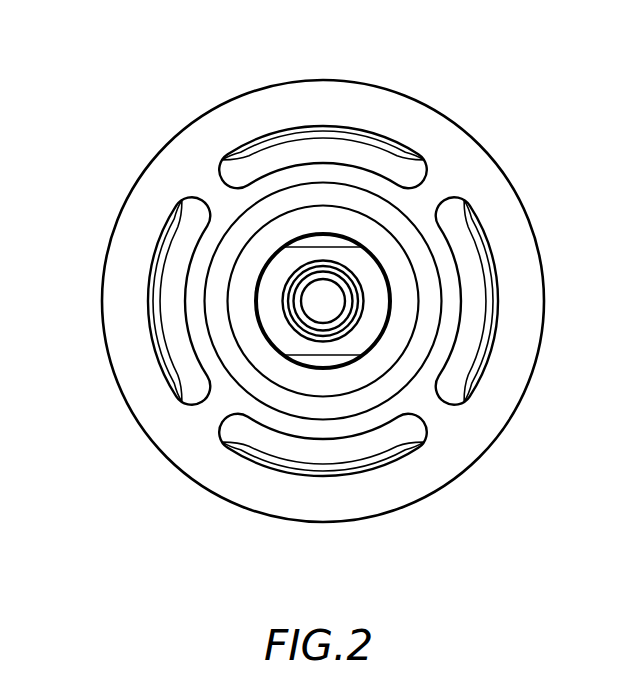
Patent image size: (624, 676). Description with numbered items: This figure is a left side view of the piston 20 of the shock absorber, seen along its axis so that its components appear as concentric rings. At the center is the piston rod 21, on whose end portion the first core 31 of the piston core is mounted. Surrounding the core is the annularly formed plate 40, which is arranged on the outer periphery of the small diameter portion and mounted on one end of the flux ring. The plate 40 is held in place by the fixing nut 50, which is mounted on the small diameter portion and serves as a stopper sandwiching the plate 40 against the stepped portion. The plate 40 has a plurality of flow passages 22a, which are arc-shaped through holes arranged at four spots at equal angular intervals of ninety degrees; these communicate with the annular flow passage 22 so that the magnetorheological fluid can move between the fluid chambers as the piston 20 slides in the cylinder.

The piston 20 is at (486, 106).
The piston rod 21 is at (393, 301).
The flow passage 22 is at (337, 128).
The flow passage 22a is at (283, 141).
The first core 31 is at (403, 326).
The plate 40 is at (210, 108).
The fixing nut 50 is at (215, 302).